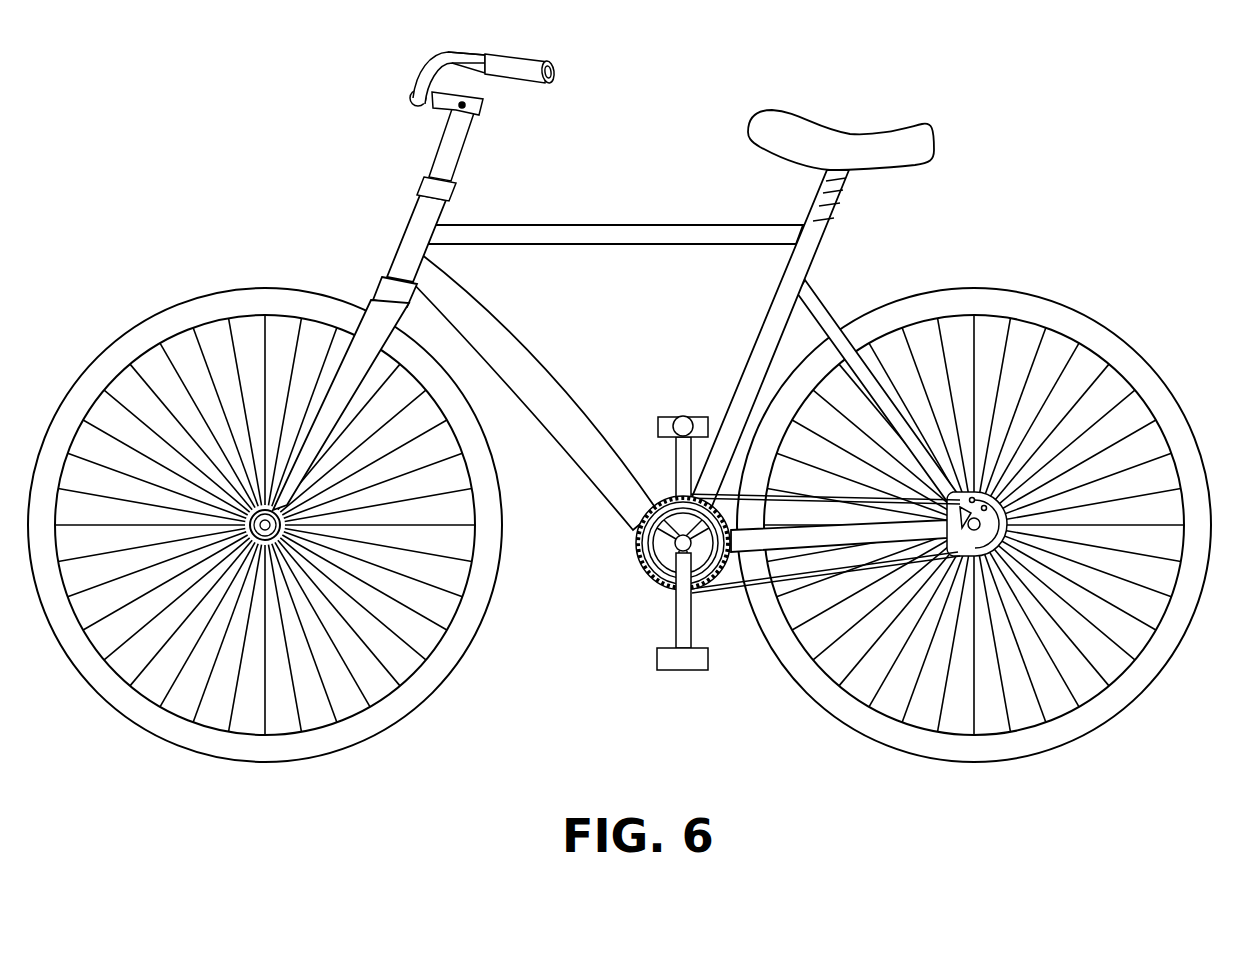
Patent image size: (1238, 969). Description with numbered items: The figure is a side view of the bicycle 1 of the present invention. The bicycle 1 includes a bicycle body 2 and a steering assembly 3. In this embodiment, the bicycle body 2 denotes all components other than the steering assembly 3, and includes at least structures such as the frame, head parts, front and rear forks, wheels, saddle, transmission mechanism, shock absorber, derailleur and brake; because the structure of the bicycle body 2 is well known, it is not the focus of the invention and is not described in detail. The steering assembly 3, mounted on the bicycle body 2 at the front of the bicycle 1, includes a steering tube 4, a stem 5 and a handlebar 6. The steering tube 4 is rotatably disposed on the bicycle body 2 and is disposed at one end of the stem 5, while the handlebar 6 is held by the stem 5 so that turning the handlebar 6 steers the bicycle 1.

The bicycle 1 is at (147, 67).
The bicycle body 2 is at (625, 210).
The steering assembly 3 is at (331, 60).
The steering tube 4 is at (445, 165).
The stem 5 is at (452, 102).
The handlebar 6 is at (428, 83).